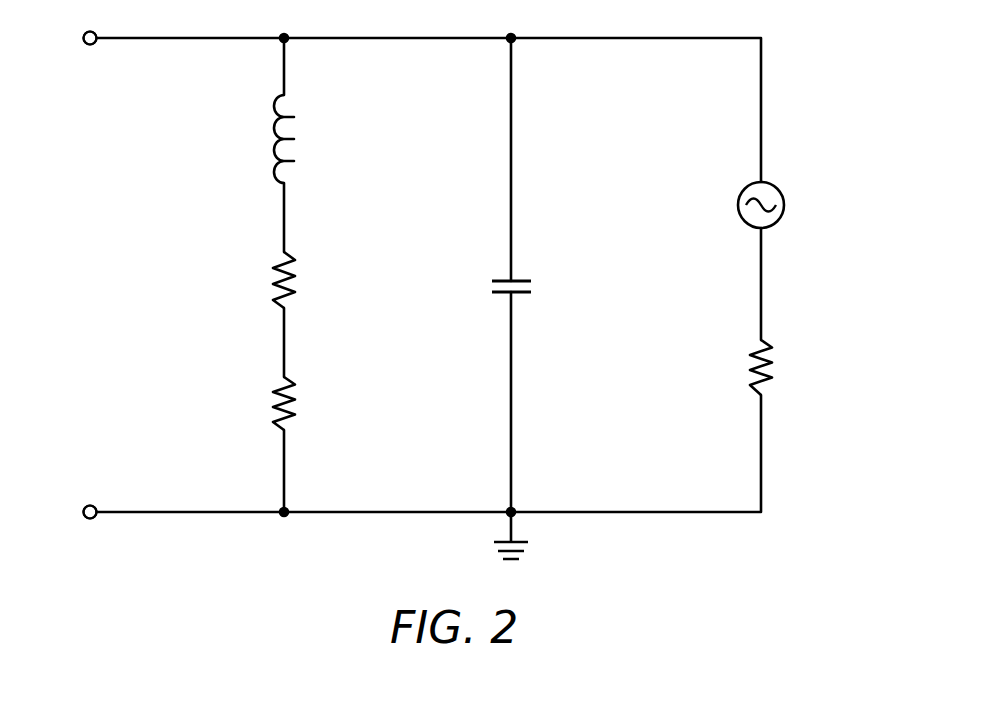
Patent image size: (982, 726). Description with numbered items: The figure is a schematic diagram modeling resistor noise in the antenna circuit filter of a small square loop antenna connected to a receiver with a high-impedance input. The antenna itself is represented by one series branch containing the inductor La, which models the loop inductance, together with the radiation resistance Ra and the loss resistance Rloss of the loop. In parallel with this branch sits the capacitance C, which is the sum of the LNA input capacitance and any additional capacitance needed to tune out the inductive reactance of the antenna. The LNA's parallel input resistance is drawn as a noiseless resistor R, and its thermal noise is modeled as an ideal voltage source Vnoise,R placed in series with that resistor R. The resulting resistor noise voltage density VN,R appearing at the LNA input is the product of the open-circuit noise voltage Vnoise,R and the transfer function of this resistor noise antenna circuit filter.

The resistor noise voltage density VN,R is at (94, 275).
The inductor La is at (308, 139).
The radiation resistance Ra is at (309, 281).
The loss resistance Rloss is at (324, 405).
The capacitance C is at (527, 286).
The ideal voltage source Vnoise,R is at (815, 207).
The noiseless resistor R is at (775, 367).